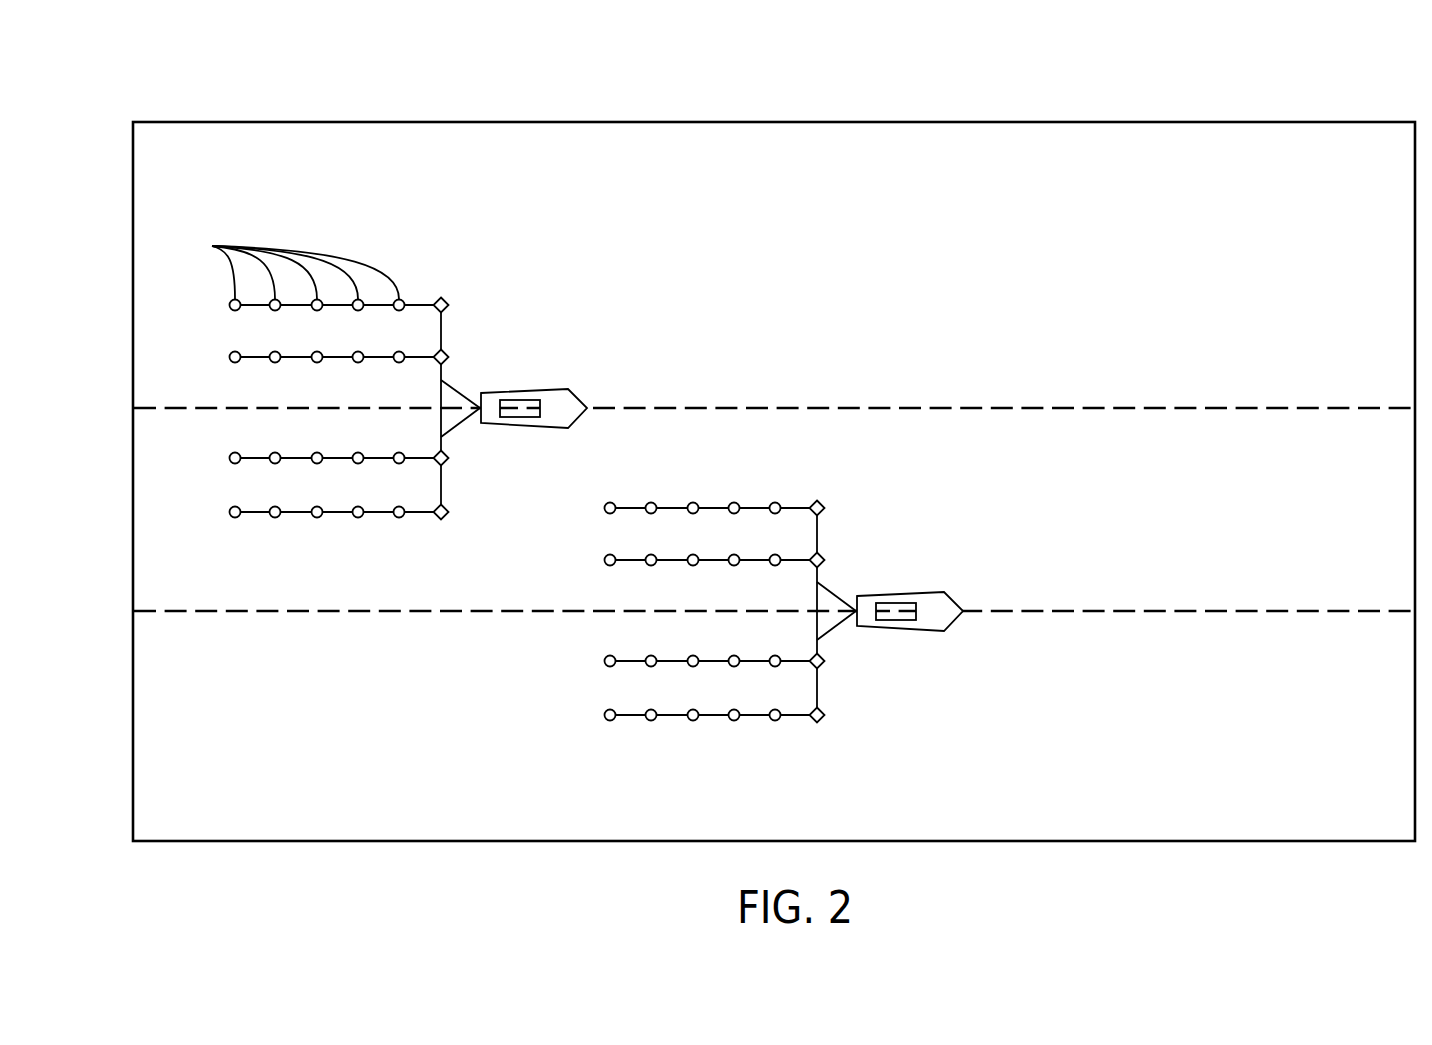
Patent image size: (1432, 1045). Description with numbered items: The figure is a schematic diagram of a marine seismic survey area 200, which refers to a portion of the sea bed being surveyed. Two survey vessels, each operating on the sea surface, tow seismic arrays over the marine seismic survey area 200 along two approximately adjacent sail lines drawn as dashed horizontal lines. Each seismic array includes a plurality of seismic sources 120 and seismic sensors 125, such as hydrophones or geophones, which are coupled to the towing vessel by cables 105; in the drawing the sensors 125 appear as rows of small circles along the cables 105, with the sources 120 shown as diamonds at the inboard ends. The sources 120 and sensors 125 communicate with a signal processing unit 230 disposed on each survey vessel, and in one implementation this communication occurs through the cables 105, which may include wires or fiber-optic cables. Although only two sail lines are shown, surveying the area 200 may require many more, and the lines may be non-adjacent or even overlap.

The marine seismic survey area 200 is at (885, 121).
The seismic sensors 125 is at (277, 264).
The cables 105 is at (423, 303).
The seismic sources 120 is at (447, 299).
The signal processing unit 230 is at (525, 420).